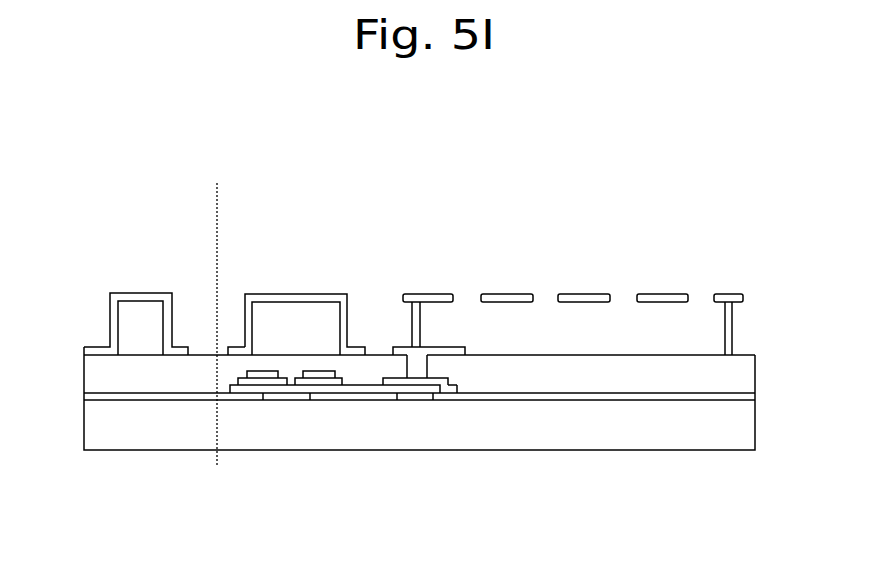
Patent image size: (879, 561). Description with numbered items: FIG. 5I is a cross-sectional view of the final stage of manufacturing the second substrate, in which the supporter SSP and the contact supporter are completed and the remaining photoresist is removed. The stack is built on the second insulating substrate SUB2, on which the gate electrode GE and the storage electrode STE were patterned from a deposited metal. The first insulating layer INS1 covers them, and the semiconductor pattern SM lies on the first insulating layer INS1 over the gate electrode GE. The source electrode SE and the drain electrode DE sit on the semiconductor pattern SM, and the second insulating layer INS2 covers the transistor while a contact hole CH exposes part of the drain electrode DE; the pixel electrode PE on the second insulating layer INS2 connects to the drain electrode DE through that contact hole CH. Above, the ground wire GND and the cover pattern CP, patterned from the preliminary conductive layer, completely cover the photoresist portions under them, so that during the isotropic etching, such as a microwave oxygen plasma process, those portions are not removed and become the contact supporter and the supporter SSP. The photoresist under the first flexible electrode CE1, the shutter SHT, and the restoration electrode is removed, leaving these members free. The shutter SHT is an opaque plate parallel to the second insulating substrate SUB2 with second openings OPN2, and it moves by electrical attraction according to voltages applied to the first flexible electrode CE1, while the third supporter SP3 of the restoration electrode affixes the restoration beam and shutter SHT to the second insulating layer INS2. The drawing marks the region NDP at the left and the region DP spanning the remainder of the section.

The ground wire GND is at (112, 324).
The cover pattern CP is at (230, 350).
The source electrode SE is at (234, 393).
The gate electrode GE is at (278, 398).
The supporter SSP is at (287, 345).
The semiconductor pattern SM is at (321, 380).
The drain electrode DE is at (359, 386).
The storage electrode STE is at (408, 394).
The contact hole CH is at (423, 358).
The pixel electrode PE is at (457, 349).
The first flexible electrode CE1 is at (427, 293).
The third supporter SP3 is at (724, 293).
The second opening OPN2 is at (545, 306).
The shutter SHT is at (591, 303).
The second insulating layer INS2 is at (747, 370).
The first insulating layer INS1 is at (749, 395).
The second insulating substrate SUB2 is at (742, 433).
The non-display area NDP is at (85, 205).
The display area DP is at (224, 192).